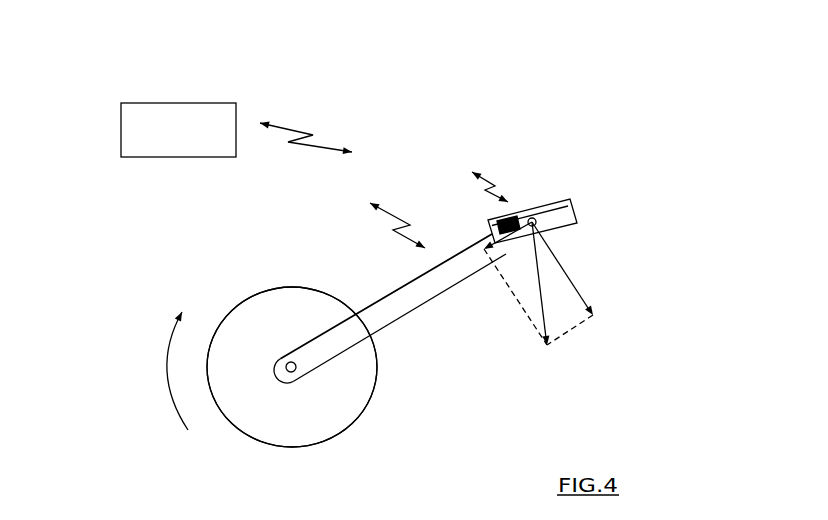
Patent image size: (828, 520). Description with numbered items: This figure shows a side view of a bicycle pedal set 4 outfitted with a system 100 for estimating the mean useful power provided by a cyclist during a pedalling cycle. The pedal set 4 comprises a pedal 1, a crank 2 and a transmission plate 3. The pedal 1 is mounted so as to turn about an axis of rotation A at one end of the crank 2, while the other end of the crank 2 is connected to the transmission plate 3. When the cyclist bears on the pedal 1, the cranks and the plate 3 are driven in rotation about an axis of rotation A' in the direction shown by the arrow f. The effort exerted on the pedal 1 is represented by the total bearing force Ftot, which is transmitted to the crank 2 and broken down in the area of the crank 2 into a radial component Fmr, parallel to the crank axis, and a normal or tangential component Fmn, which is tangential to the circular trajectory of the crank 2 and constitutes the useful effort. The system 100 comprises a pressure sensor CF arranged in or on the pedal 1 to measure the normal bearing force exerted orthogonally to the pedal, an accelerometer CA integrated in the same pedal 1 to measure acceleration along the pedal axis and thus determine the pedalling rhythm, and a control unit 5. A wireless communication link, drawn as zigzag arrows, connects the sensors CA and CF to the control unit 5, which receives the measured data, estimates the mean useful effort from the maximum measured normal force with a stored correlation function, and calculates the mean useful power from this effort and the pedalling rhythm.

The system for estimation of power 100 is at (384, 98).
The control unit 5 is at (138, 144).
The pedal set 4 is at (273, 262).
The transmission plate 3 is at (343, 407).
The crank 2 is at (398, 312).
The pedal 1 is at (575, 210).
The axis of rotation of the pedal A is at (586, 235).
The axis of rotation of the cranks and plate A' is at (288, 441).
The acceleration sensor CA is at (503, 218).
The force sensor CF is at (547, 200).
The radial force component at the crank Fmr is at (518, 248).
The normal force component at the crank Fmn is at (573, 280).
The total bearing force Ftot is at (545, 318).
The direction of rotation arrow f is at (167, 361).